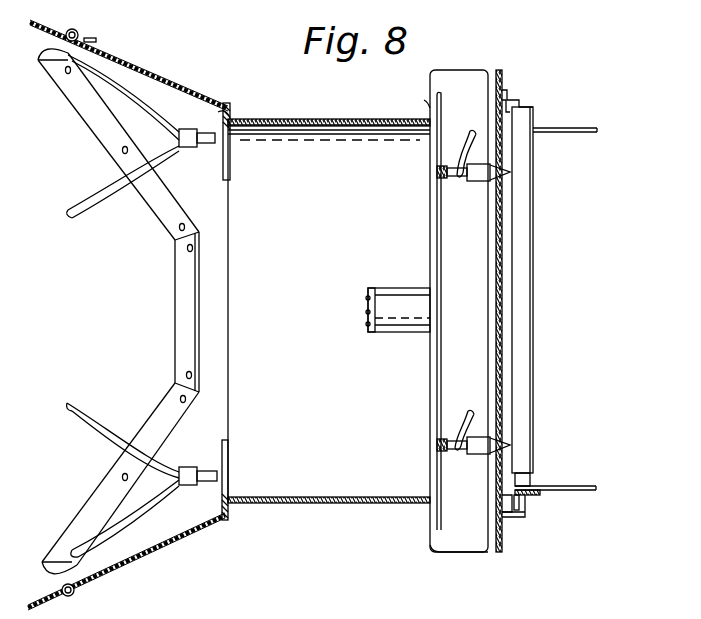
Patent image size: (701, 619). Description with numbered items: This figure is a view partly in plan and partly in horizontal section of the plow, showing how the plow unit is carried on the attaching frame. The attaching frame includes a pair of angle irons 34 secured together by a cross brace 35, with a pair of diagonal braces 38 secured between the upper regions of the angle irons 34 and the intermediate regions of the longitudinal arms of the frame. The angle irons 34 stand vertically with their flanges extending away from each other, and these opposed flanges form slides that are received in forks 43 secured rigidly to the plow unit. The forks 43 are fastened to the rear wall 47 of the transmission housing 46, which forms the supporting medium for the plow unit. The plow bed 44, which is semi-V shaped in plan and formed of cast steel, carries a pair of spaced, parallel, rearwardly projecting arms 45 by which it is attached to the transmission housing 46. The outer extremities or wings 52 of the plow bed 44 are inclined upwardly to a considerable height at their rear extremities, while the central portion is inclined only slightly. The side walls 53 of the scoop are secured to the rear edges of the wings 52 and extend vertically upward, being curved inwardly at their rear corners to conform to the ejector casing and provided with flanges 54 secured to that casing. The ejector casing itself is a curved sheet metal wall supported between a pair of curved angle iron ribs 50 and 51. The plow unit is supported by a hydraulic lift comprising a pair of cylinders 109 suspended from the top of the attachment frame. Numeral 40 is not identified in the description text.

The angle irons 34 is at (520, 500).
The cross brace 35 is at (546, 303).
The diagonal braces 38 is at (597, 130).
The box wall 40 is at (329, 229).
The forks 43 is at (525, 515).
The plow bed 44 is at (208, 323).
The rearwardly projecting arms 45 is at (329, 311).
The transmission housing 46 is at (466, 311).
The rear wall 47 is at (498, 549).
The curved angle iron rib 50 is at (230, 104).
The curved angle iron rib 51 is at (430, 103).
The wings 52 is at (142, 306).
The side walls 53 is at (148, 73).
The flanges 54 is at (232, 111).
The cylinders 109 is at (473, 187).